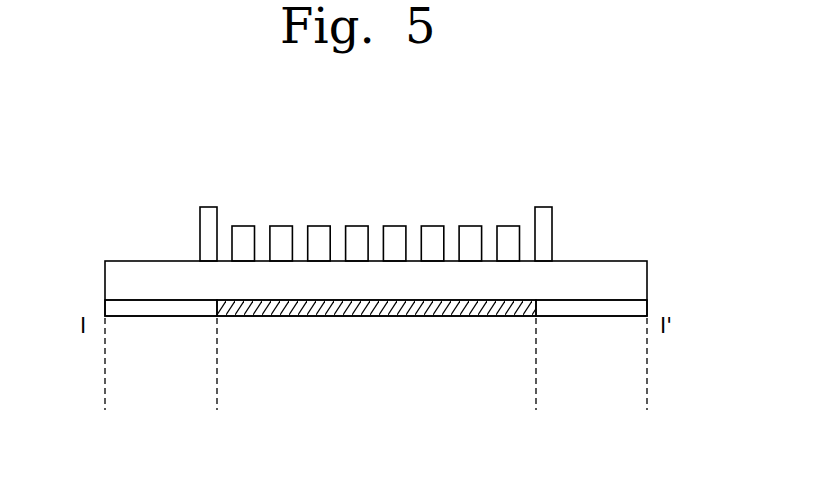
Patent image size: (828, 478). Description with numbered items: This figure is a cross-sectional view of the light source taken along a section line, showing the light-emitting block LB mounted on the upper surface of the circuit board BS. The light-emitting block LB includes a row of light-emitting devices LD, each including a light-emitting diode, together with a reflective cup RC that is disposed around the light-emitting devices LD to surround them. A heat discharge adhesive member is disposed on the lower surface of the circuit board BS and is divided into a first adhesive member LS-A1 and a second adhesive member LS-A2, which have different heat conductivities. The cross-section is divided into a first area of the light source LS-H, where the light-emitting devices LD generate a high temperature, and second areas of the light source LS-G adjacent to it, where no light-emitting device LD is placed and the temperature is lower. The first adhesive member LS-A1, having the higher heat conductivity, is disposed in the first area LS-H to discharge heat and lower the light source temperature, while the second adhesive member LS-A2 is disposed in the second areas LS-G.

The circuit board BS is at (635, 277).
The first adhesive member LS-A1 is at (377, 310).
The second adhesive member LS-A2 is at (162, 309).
The reflective cup RC is at (210, 227).
The light-emitting device LD is at (507, 233).
The light-emitting block LB is at (649, 190).
The second area of the light source LS-G is at (217, 417).
The first area of the light source LS-H is at (536, 417).